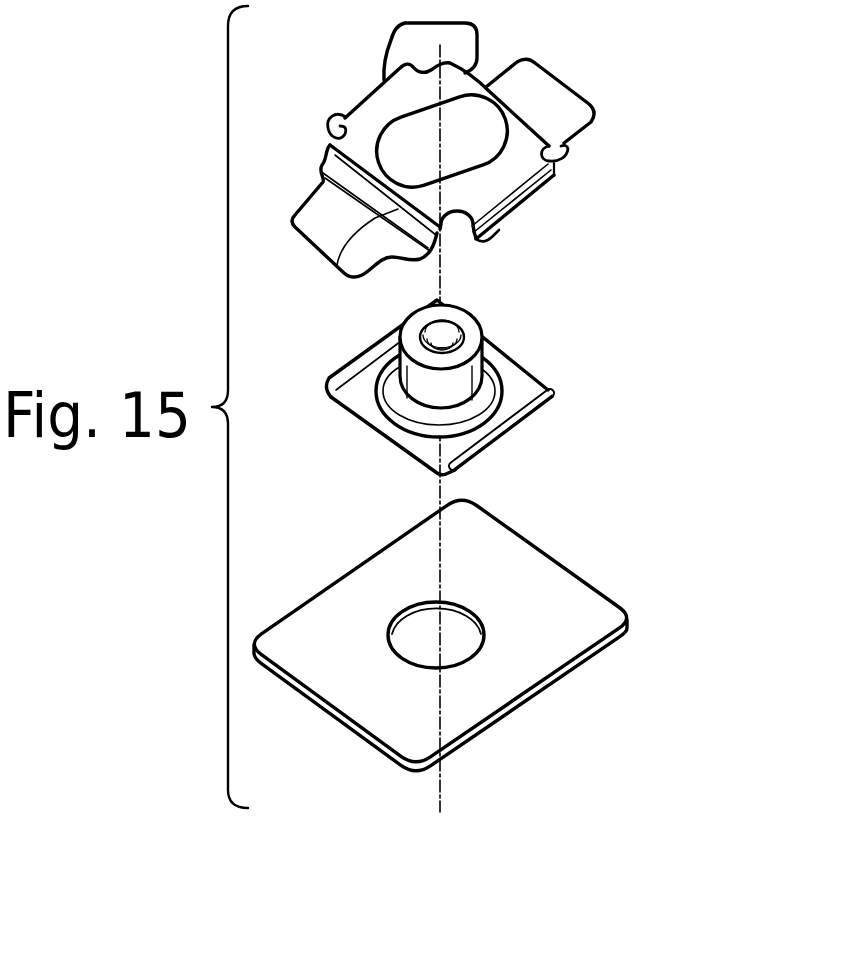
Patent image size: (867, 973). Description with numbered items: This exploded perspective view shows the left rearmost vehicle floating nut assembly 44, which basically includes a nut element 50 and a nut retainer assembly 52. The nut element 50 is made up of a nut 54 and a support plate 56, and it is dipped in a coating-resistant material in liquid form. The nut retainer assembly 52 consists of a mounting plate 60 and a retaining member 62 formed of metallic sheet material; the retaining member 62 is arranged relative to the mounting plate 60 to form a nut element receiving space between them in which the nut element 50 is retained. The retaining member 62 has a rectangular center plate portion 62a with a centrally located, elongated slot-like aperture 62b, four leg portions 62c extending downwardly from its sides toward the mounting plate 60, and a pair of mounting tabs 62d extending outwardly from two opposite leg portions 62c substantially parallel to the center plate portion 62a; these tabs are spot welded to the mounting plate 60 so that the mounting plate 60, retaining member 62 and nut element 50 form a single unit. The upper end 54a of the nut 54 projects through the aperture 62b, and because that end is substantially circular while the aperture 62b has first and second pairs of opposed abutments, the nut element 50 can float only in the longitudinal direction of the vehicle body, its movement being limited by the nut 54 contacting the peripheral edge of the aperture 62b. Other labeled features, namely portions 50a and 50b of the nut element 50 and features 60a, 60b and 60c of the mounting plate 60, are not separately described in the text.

The vehicle floating nut assembly 44 is at (668, 170).
The nut element 50 is at (593, 296).
The nut assembly top side 50a' 50a is at (467, 308).
The nut assembly edge 50b' 50b is at (385, 434).
The nut retainer assembly 52 is at (745, 296).
The nut 54 is at (466, 321).
The threaded bore of nut 54a' 54a is at (420, 333).
The support plate 56 is at (527, 378).
The mounting plate 60 is at (566, 548).
The base plate top surface 60a' 60a is at (580, 603).
The base plate edge 60b' 60b is at (603, 653).
The base plate aperture 60c' 60c is at (468, 656).
The retaining member 62 is at (560, 206).
The center plate portion 62a is at (530, 136).
The aperture 62b is at (403, 132).
The leg portions 62c is at (400, 24).
The mounting tabs 62d is at (527, 90).